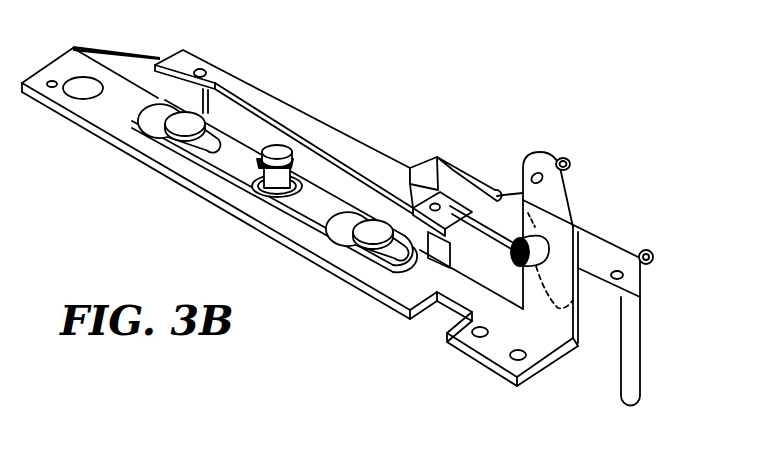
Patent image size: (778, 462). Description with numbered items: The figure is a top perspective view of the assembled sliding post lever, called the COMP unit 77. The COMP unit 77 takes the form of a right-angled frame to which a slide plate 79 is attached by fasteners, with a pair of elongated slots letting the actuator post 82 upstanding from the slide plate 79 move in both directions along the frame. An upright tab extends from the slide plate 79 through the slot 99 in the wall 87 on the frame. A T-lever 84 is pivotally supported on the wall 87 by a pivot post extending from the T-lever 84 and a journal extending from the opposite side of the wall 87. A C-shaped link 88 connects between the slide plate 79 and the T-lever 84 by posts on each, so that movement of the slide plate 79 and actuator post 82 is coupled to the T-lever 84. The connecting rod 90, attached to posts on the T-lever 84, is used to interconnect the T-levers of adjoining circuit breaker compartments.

The COMP unit 77 is at (556, 437).
The slide plate 79 is at (321, 224).
The actuator post 82 is at (282, 147).
The T-lever 84 is at (567, 200).
The wall 87 is at (498, 270).
The C-shaped link 88 is at (478, 185).
The connecting rod 90 is at (637, 348).
The slot 99 is at (246, 112).